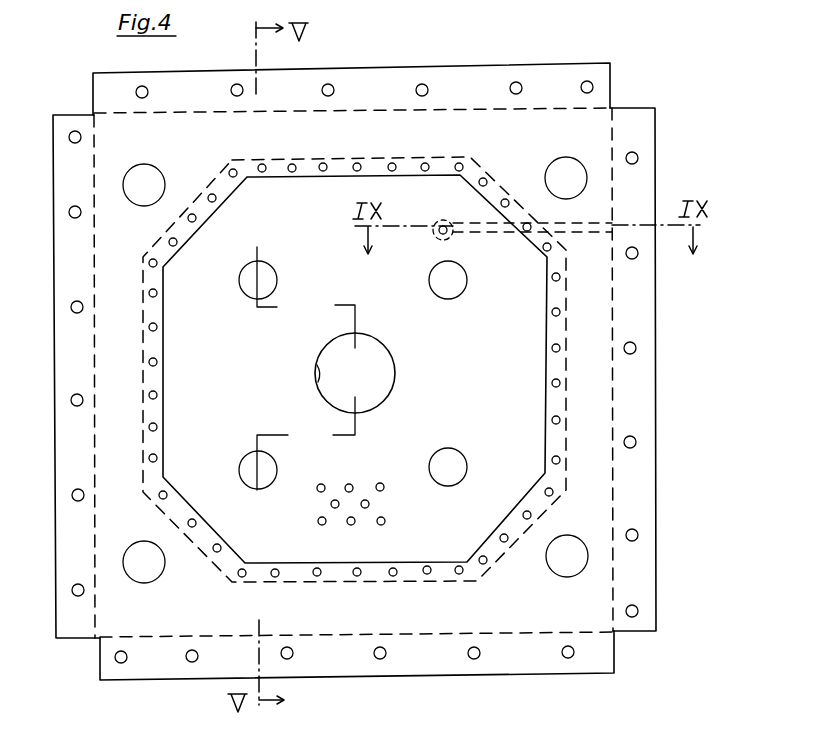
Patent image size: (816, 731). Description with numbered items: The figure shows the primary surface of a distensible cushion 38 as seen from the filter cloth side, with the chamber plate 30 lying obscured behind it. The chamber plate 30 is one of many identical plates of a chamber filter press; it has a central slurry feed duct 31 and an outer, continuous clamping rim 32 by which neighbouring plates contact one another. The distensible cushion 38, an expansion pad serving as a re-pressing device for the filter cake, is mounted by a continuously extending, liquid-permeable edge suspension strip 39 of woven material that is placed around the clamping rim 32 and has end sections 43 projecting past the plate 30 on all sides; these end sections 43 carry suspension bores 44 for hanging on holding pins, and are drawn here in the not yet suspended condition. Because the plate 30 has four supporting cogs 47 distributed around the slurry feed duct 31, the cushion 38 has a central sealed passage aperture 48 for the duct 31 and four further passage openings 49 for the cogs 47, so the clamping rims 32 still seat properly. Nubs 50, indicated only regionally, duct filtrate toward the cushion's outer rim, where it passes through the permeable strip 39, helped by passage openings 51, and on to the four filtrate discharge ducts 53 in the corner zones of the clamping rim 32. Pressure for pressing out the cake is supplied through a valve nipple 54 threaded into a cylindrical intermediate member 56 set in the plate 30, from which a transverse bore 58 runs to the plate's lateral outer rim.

The chamber plate 30 is at (460, 108).
The central slurry feed duct 31 is at (372, 385).
The clamping rim 32 is at (143, 353).
The distensible cushion 38 is at (546, 473).
The edge suspension strip 39 is at (597, 344).
The end sections 43 is at (378, 93).
The suspension bores 44 is at (72, 590).
The supporting cogs 47 is at (450, 277).
The central sealed passage aperture 48 is at (317, 366).
The passage openings 49 is at (242, 274).
The nubs 50 is at (388, 520).
The passage openings 51 is at (316, 577).
The filtrate discharge ducts 53 is at (148, 183).
The valve nipple 54 is at (433, 233).
The cylindrical intermediate member 56 is at (445, 220).
The transverse bore 58 is at (580, 233).